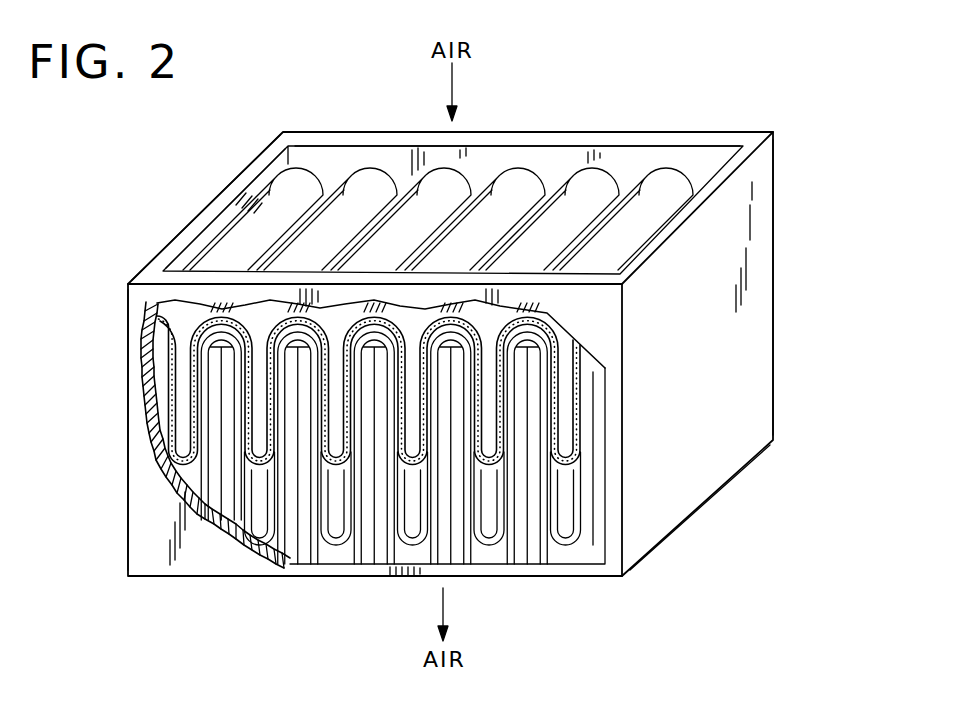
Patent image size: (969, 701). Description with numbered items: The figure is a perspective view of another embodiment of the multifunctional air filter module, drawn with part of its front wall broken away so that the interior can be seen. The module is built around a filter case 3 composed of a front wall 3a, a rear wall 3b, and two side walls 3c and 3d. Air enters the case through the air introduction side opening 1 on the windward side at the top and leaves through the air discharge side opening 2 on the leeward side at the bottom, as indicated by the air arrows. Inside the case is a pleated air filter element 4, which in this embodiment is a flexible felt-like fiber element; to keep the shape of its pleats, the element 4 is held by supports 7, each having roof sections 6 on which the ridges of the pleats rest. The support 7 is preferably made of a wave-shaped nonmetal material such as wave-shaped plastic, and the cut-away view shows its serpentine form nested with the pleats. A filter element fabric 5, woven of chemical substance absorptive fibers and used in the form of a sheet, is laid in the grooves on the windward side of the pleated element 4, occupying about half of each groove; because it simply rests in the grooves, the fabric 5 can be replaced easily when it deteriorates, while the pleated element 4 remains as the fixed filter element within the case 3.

The air introduction side opening 1 is at (465, 160).
The air discharge side opening 2 is at (482, 553).
The filter case 3 is at (775, 280).
The front wall 3a is at (158, 535).
The rear wall 3b is at (540, 142).
The side wall 3c is at (735, 350).
The side wall 3d is at (233, 183).
The pleated air filter element 4 is at (588, 540).
The filter element fabric 5 is at (170, 397).
The roof section 6 is at (376, 326).
The support 7 is at (358, 540).